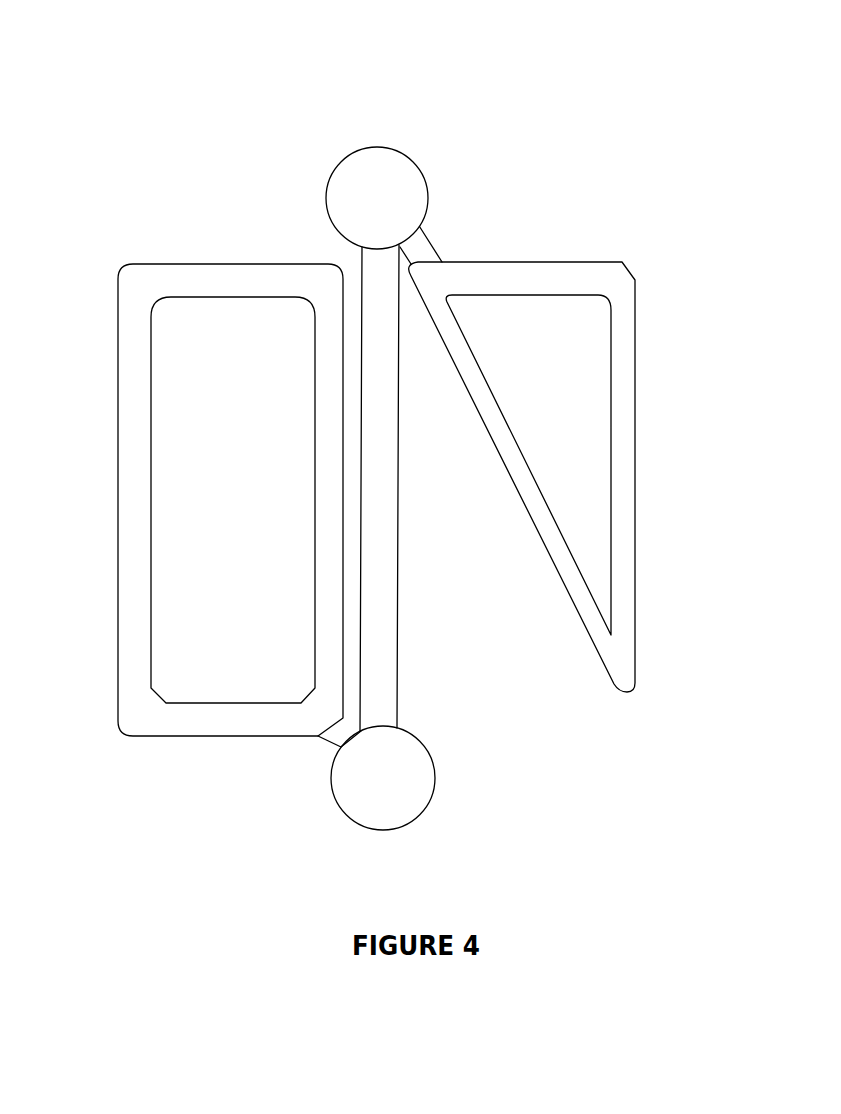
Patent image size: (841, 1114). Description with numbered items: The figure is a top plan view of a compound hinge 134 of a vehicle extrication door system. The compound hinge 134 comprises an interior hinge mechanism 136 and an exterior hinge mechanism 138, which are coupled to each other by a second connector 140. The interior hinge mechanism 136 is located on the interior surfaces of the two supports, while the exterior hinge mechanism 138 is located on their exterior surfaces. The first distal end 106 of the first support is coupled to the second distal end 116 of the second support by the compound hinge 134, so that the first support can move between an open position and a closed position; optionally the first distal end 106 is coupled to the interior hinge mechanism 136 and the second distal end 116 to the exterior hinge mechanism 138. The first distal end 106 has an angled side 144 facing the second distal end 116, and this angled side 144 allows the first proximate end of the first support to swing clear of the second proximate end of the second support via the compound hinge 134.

The compound hinge 134 is at (503, 62).
The interior hinge mechanism 136 is at (405, 212).
The exterior hinge mechanism 138 is at (361, 788).
The second connector 140 is at (385, 628).
The second distal end 116 is at (132, 588).
The first distal end 106 is at (560, 477).
The angled side 144 is at (542, 507).